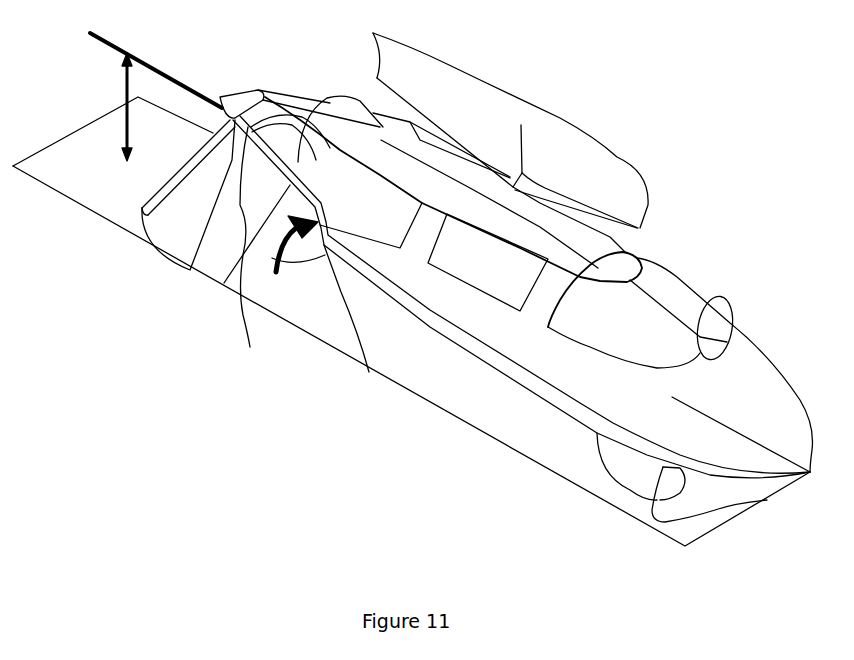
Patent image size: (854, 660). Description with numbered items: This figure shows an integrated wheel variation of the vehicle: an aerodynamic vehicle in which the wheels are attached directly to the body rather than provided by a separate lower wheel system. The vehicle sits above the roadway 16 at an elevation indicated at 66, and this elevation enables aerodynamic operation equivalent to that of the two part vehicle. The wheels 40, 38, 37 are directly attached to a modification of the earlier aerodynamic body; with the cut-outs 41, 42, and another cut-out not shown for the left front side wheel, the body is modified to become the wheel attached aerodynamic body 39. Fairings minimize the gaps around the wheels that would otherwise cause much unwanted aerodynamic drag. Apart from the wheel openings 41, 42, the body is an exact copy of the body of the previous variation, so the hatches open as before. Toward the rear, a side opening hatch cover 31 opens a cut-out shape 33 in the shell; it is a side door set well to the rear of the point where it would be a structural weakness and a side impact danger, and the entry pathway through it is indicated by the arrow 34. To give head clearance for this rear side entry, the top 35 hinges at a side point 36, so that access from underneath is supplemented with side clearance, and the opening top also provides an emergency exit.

The roadway 16 is at (113, 175).
The side opening hatch cover 31 is at (187, 229).
The cut-out shape 33 is at (250, 347).
The arrow 34 is at (283, 266).
The top 35 is at (617, 157).
The side point 36 is at (521, 125).
The wheel 37 is at (697, 307).
The wheel 38 is at (607, 460).
The wheel attached aerodynamic body 39 is at (533, 347).
The wheel 40 is at (369, 372).
The cut-out 41 is at (263, 92).
The cut-out 42 is at (767, 500).
The elevation above the roadway 66 is at (127, 127).